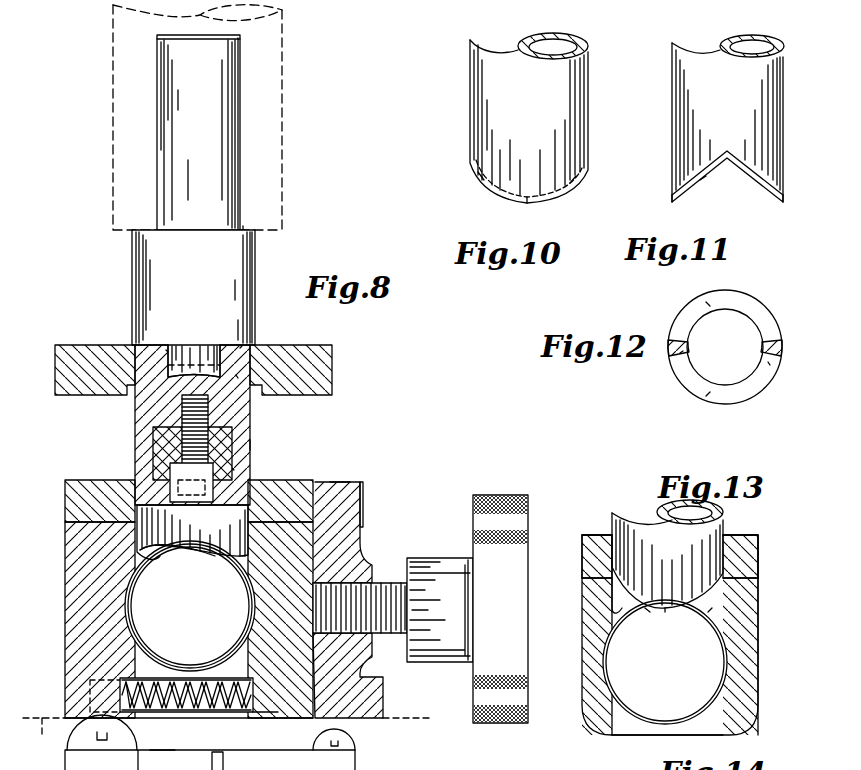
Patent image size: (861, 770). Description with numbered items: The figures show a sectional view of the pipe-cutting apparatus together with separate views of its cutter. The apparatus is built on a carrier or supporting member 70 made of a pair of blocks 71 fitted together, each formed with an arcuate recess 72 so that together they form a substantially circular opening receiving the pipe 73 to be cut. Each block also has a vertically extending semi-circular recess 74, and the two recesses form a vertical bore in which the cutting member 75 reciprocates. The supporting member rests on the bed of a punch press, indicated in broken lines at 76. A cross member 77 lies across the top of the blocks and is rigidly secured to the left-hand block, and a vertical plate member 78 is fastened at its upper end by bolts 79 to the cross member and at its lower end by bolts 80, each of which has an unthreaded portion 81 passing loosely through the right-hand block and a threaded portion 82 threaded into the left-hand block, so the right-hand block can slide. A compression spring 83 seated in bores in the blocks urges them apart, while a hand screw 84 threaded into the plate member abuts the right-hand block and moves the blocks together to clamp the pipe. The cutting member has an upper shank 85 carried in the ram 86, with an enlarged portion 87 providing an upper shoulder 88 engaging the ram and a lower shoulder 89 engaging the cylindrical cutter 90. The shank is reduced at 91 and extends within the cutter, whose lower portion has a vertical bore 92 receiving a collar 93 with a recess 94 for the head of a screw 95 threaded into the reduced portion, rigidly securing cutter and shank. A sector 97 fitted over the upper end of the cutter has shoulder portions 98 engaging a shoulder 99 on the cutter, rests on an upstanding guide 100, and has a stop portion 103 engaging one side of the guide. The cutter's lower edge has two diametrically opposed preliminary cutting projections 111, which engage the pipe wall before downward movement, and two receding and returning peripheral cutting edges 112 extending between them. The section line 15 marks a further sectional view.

In FIG. 8, the section line 15 is at (277, 558).
In FIG. 8, the carrier or supporting member 70 is at (167, 620).
In FIG. 13, the carrier or supporting member 70 is at (760, 605).
In FIG. 8, the blocks 71 is at (72, 624).
In FIG. 8, the arcuate recesses 72 is at (231, 663).
In FIG. 8, the pipe 73 is at (126, 603).
In FIG. 13, the pipe 73 is at (725, 660).
In FIG. 8, the semi-circular recess 74 is at (137, 560).
In FIG. 13, the semi-circular recess 74 is at (612, 602).
In FIG. 8, the cutting member 75 is at (256, 444).
In FIG. 8, the punch press bed 76 is at (189, 742).
In FIG. 8, the cross member 77 is at (82, 493).
In FIG. 13, the cross member 77 is at (752, 550).
In FIG. 8, the vertical plate member 78 is at (340, 490).
In FIG. 8, the bolts 79 is at (362, 497).
In FIG. 8, the bolts 80 is at (380, 718).
In FIG. 8, the unthreaded portion 81 is at (278, 716).
In FIG. 8, the threaded portion 82 is at (82, 718).
In FIG. 8, the compression spring 83 is at (190, 712).
In FIG. 8, the hand screw 84 is at (428, 560).
In FIG. 8, the shank 85 is at (240, 152).
In FIG. 8, the ram 86 is at (282, 97).
In FIG. 8, the enlarged portion 87 is at (247, 258).
In FIG. 8, the upper shoulder 88 is at (243, 231).
In FIG. 8, the lower shoulder 89 is at (248, 358).
In FIG. 8, the cylindrical cutter 90 is at (240, 418).
In FIG. 10, the cylindrical cutter 90 is at (587, 96).
In FIG. 11, the cylindrical cutter 90 is at (688, 117).
In FIG. 12, the cylindrical cutter 90 is at (746, 292).
In FIG. 13, the cylindrical cutter 90 is at (632, 525).
In FIG. 8, the reduced portion 91 is at (166, 350).
In FIG. 8, the vertical bore 92 is at (234, 470).
In FIG. 8, the collar 93 is at (160, 448).
In FIG. 8, the recess 94 is at (178, 474).
In FIG. 8, the screw 95 is at (187, 405).
In FIG. 8, the sector 97 is at (330, 345).
In FIG. 8, the shoulder portions 98 is at (240, 348).
In FIG. 8, the shoulder 99 is at (236, 375).
In FIG. 8, the guide 100 is at (168, 758).
In FIG. 8, the stop portion 103 is at (218, 760).
In FIG. 8, the preliminary cutting projections 111 is at (218, 558).
In FIG. 10, the preliminary cutting projections 111 is at (527, 203).
In FIG. 11, the preliminary cutting projections 111 is at (783, 203).
In FIG. 12, the preliminary cutting projections 111 is at (770, 365).
In FIG. 13, the preliminary cutting projections 111 is at (662, 612).
In FIG. 8, the peripheral cutting edges 112 is at (172, 548).
In FIG. 10, the peripheral cutting edges 112 is at (570, 183).
In FIG. 11, the peripheral cutting edges 112 is at (706, 176).
In FIG. 12, the peripheral cutting edges 112 is at (706, 396).
In FIG. 13, the peripheral cutting edges 112 is at (708, 612).